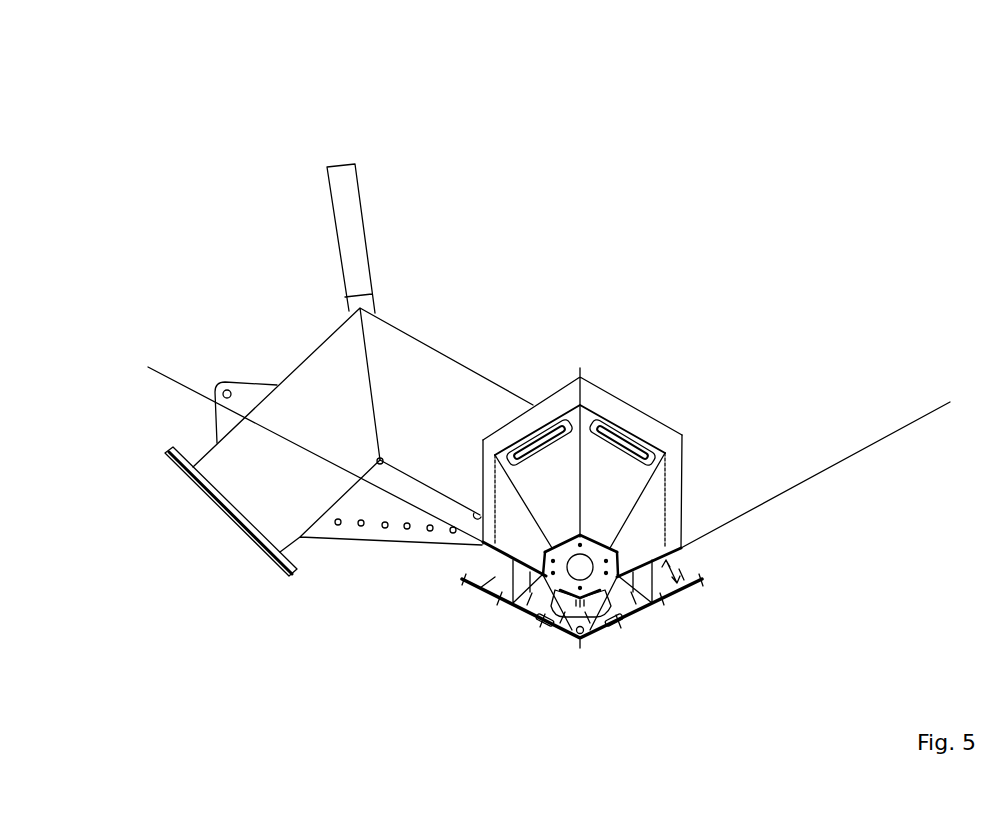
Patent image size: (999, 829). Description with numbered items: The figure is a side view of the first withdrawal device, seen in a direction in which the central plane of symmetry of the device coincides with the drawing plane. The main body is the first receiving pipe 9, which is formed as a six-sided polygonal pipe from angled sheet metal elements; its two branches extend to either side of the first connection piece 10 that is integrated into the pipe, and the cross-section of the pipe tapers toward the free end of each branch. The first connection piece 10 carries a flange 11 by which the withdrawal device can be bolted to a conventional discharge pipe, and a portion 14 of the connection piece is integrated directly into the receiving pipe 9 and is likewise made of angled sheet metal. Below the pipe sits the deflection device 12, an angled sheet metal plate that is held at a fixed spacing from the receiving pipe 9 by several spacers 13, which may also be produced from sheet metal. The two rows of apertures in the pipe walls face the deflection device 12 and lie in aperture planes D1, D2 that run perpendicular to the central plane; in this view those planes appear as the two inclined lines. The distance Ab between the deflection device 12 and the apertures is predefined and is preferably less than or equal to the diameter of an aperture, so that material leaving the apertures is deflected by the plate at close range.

The first receiving pipe 9 is at (633, 535).
The first connection piece 10 is at (493, 318).
The flange 11 is at (292, 574).
The deflection device 12 is at (490, 593).
The spacers 13 is at (618, 607).
The portion of the first connection piece 14 is at (612, 403).
The aperture plane D1 is at (817, 457).
The aperture plane D2 is at (315, 429).
The distance Ab is at (687, 567).